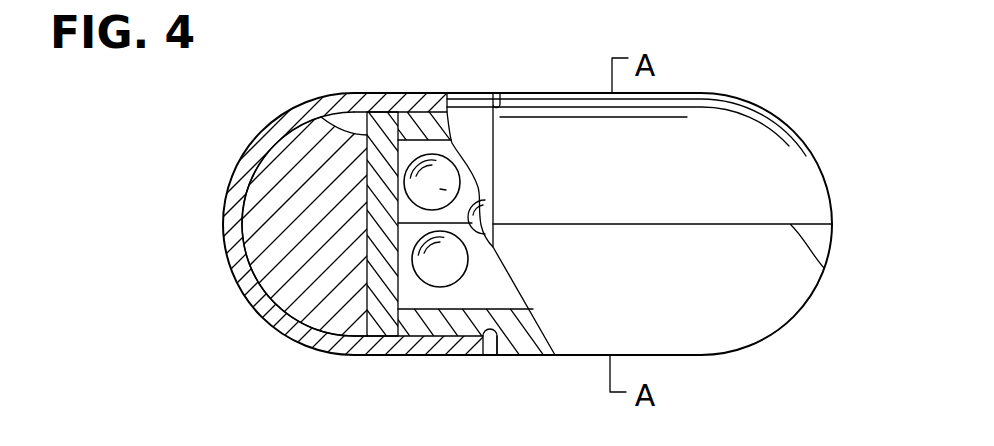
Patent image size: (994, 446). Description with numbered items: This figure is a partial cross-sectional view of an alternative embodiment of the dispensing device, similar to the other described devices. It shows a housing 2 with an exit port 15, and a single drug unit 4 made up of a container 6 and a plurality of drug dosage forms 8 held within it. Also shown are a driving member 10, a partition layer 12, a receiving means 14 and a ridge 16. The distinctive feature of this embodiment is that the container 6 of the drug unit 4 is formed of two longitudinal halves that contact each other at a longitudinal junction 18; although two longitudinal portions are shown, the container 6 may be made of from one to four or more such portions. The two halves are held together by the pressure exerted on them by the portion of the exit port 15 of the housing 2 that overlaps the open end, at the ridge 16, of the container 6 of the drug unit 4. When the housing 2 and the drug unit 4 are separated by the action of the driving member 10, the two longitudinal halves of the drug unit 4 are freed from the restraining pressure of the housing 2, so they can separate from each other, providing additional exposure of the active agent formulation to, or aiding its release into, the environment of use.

The housing 2 is at (468, 137).
The drug unit 4 is at (818, 165).
The container 6 is at (565, 137).
The drug dosage forms 8 is at (445, 150).
The driving member 10 is at (272, 255).
The partition layer 12 is at (317, 120).
The receiving means 14 is at (497, 100).
The exit port 15 is at (490, 330).
The ridge 16 is at (395, 130).
The longitudinal junction 18 is at (824, 268).